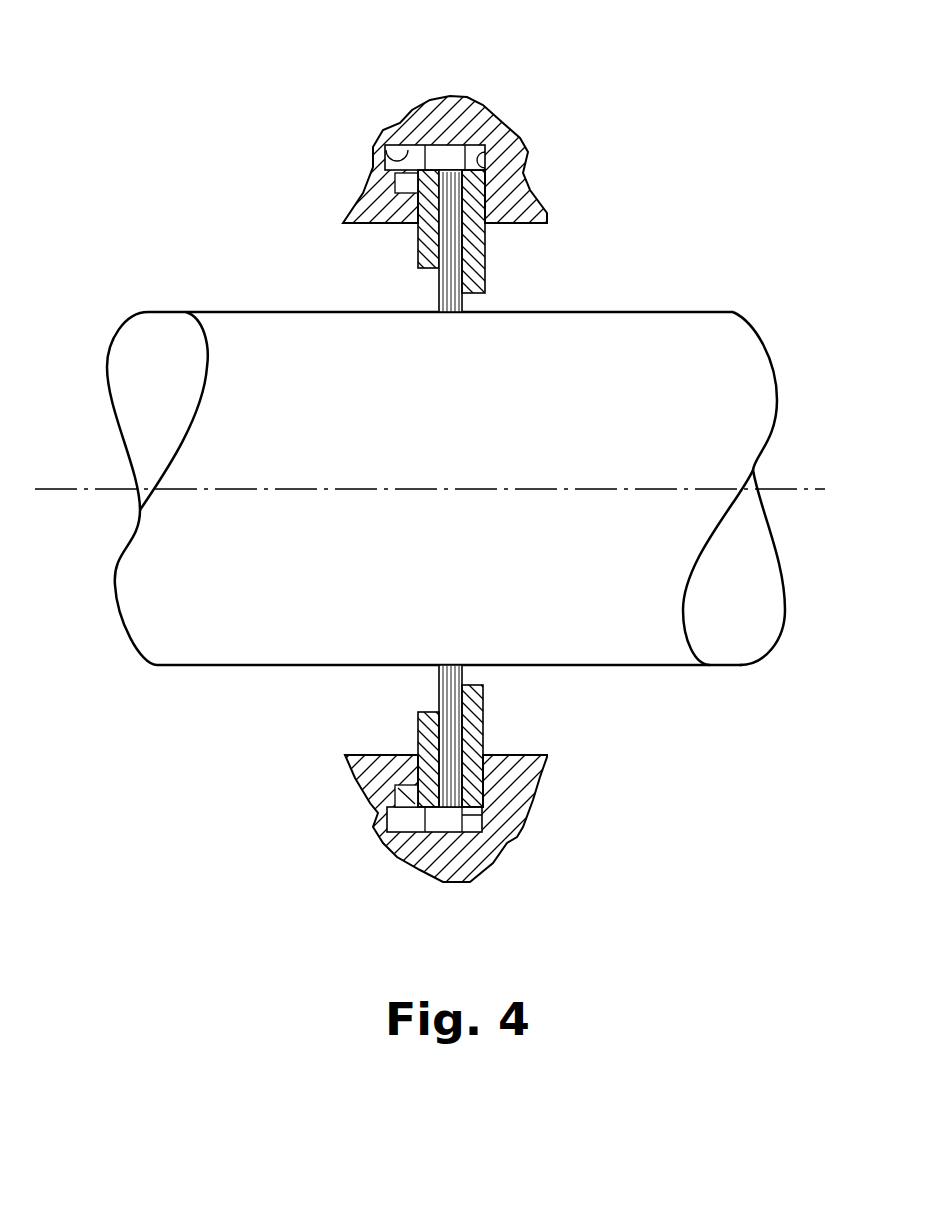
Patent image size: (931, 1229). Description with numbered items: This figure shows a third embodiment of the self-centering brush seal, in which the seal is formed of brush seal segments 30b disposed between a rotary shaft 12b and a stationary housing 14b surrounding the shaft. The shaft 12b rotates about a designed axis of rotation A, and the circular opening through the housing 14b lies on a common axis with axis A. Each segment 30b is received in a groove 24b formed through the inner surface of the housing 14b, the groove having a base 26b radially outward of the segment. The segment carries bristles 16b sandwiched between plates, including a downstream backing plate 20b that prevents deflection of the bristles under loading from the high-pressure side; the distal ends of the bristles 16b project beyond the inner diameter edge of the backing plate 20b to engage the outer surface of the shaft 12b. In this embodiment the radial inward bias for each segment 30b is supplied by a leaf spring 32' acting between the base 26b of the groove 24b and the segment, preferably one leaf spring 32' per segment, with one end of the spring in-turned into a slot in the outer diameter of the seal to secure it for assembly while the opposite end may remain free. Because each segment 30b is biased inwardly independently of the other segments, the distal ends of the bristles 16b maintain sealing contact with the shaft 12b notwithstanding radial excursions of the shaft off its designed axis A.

The shaft 12b is at (173, 338).
The housing 14b is at (370, 205).
The bristles 16b is at (438, 688).
The backing plate 20b is at (472, 705).
The groove 24b is at (422, 168).
The base of the groove 26b is at (383, 145).
The brush seal segments 30b is at (470, 777).
The leaf spring 32' is at (361, 503).
The axis of rotation A is at (797, 490).